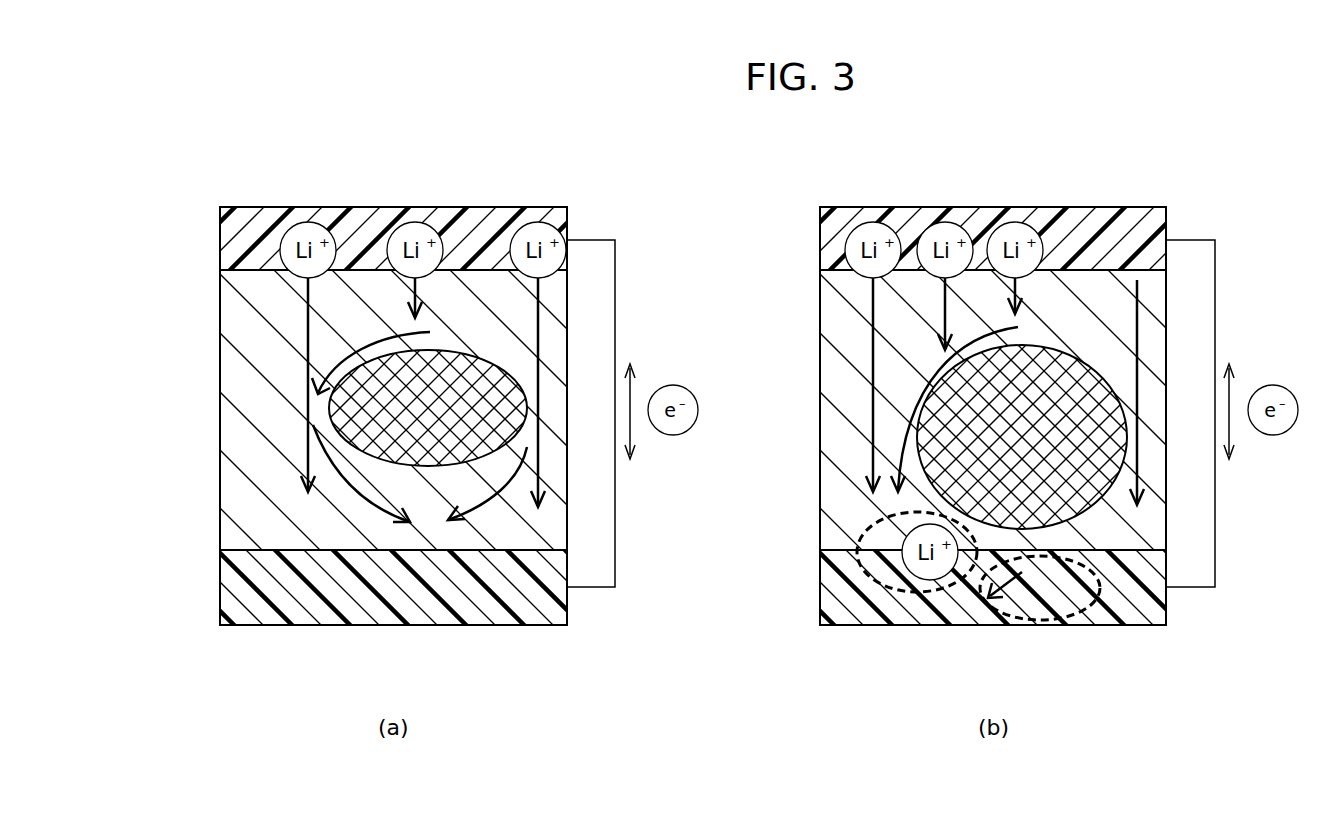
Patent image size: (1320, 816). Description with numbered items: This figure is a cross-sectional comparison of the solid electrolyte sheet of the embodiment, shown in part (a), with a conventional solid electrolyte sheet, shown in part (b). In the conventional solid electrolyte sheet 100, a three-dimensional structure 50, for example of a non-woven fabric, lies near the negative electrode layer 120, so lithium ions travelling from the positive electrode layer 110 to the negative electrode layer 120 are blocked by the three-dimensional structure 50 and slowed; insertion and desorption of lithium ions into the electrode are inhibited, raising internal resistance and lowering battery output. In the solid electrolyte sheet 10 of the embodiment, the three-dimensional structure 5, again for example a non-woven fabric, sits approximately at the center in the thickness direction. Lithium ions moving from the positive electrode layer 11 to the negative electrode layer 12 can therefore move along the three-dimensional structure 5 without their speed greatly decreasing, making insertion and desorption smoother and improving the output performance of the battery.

The three-dimensional structure 5 is at (330, 407).
The solid electrolyte sheet 10 is at (255, 322).
The positive electrode layer 11 is at (260, 213).
The negative electrode layer 12 is at (255, 615).
The three-dimensional structure 50 is at (925, 407).
The conventional solid electrolyte sheet 100 is at (855, 322).
The positive electrode layer 110 is at (860, 213).
The negative electrode layer 120 is at (855, 615).